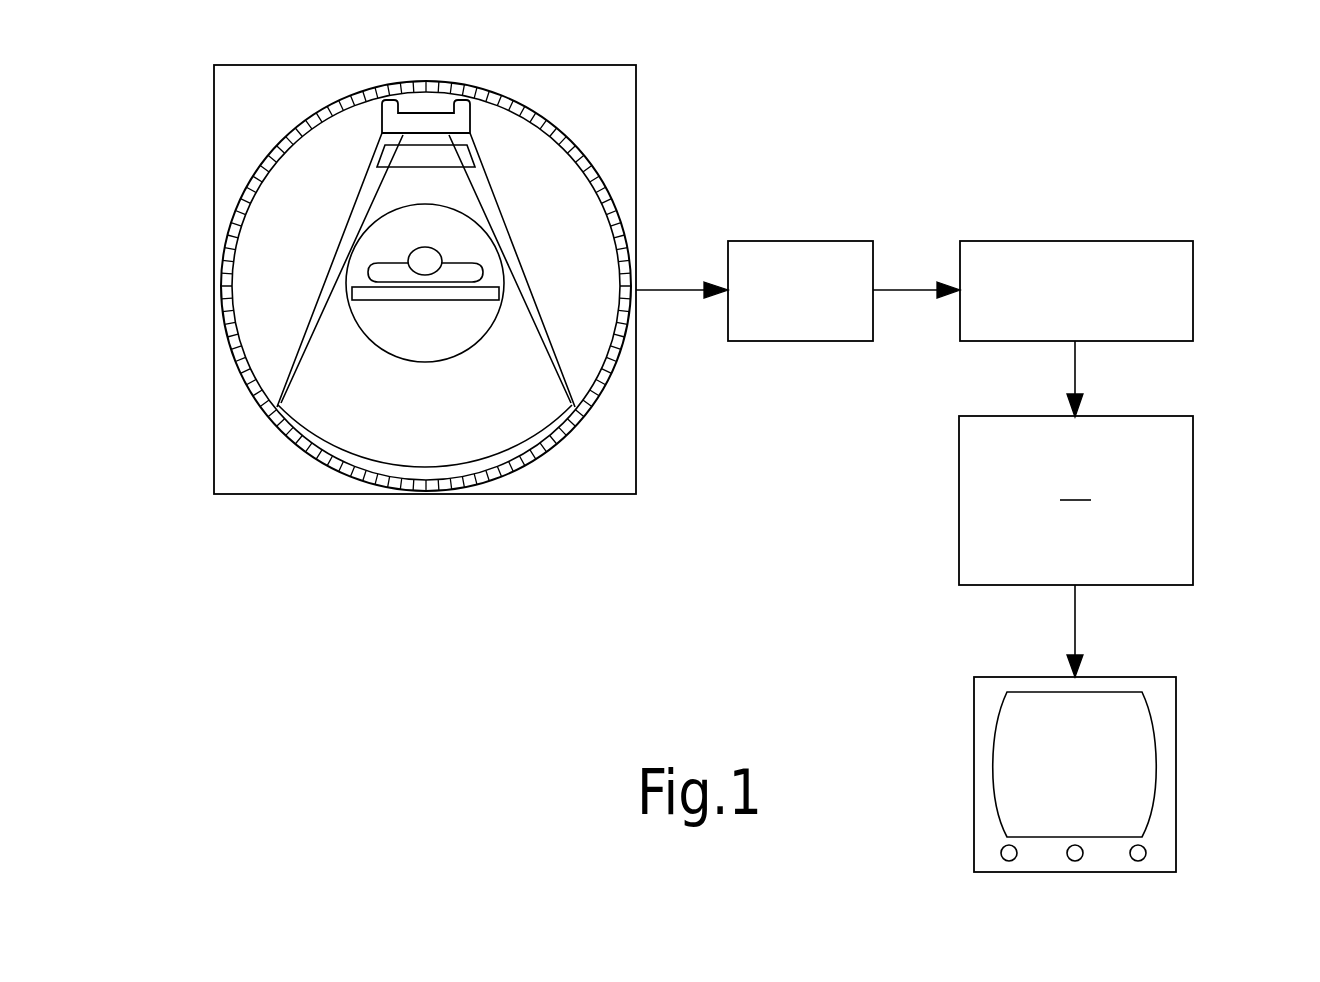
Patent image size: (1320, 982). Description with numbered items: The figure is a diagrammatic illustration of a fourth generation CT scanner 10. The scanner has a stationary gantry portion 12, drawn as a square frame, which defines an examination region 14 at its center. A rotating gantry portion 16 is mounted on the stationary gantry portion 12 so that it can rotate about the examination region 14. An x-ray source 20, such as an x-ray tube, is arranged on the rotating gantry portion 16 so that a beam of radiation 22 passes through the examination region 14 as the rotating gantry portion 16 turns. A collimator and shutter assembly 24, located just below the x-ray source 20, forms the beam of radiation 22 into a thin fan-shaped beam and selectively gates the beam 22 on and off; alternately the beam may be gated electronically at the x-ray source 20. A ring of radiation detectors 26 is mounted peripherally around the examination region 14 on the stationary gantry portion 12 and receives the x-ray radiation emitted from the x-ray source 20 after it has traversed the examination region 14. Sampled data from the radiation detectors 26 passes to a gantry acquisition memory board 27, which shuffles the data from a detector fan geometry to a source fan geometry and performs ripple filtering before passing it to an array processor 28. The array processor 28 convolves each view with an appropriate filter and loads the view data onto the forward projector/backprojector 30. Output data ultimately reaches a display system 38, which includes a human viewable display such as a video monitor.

The CT scanner 10 is at (317, 609).
The stationary gantry portion 12 is at (510, 494).
The examination region 14 is at (438, 338).
The rotating gantry portion 16 is at (340, 243).
The x-ray source 20 is at (430, 111).
The beam of radiation 22 is at (478, 187).
The collimator and shutter assembly 24 is at (378, 154).
The ring of radiation detectors 26 is at (560, 131).
The gantry acquisition memory board 27 is at (790, 341).
The array processor 28 is at (1075, 241).
The forward projector/backprojector 30 is at (1193, 498).
The display system 38 is at (1176, 772).